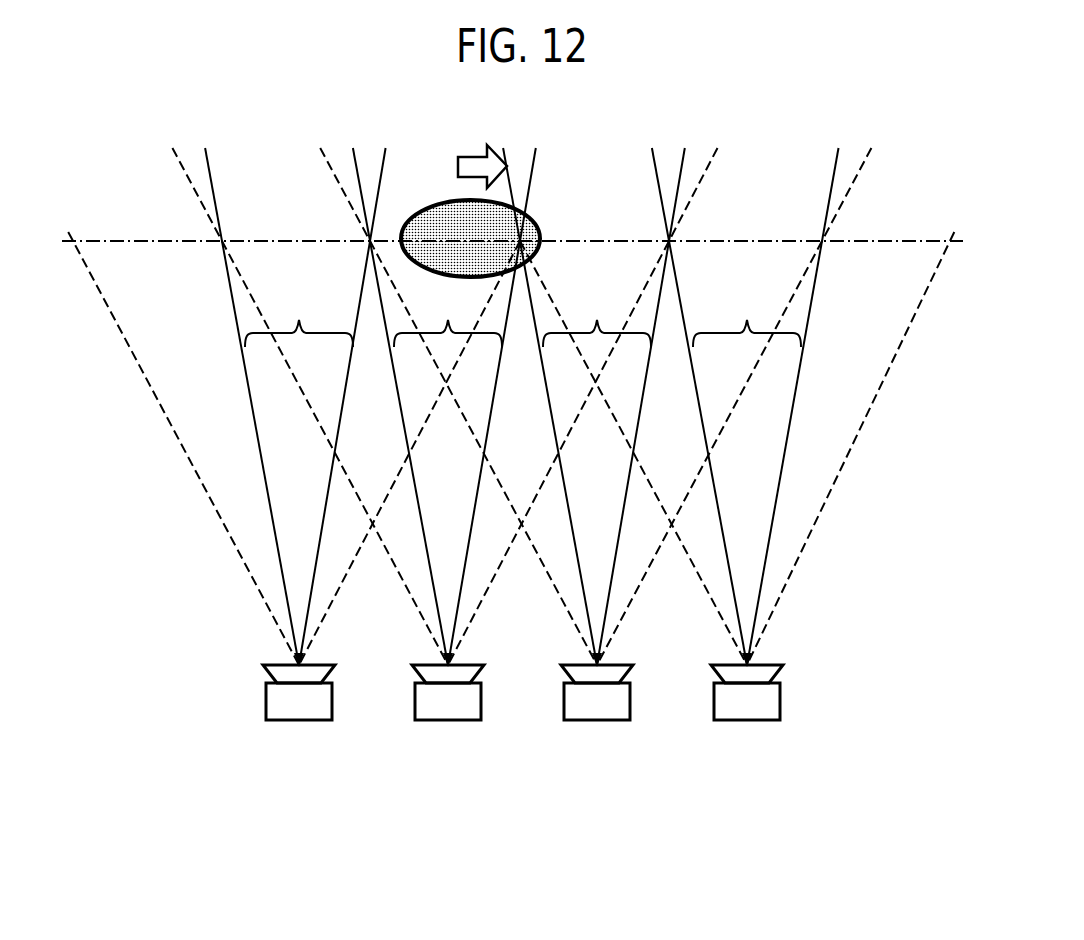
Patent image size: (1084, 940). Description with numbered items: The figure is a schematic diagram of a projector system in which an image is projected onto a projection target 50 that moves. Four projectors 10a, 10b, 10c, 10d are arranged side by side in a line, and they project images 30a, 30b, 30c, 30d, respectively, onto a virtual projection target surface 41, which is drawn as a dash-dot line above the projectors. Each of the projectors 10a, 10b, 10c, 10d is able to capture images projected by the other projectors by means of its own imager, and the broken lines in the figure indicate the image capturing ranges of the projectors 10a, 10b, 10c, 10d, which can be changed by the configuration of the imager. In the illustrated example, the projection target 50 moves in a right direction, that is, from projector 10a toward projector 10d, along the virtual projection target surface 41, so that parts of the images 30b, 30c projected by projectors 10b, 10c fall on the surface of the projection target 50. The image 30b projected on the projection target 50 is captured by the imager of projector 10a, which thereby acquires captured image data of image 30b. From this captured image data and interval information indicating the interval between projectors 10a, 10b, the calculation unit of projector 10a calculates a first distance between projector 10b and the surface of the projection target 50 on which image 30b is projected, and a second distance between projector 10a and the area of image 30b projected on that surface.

The projector 10a is at (300, 720).
The projector 10b is at (449, 720).
The projector 10c is at (598, 720).
The projector 10d is at (748, 720).
The image 30a is at (299, 318).
The image 30b is at (448, 318).
The image 30c is at (597, 318).
The image 30d is at (747, 318).
The virtual projection target surface 41 is at (160, 240).
The projection target 50 is at (536, 224).